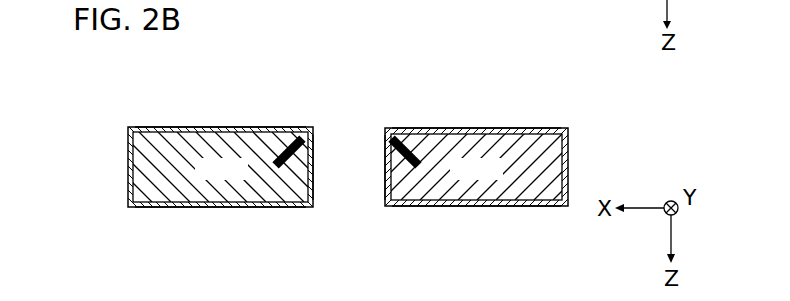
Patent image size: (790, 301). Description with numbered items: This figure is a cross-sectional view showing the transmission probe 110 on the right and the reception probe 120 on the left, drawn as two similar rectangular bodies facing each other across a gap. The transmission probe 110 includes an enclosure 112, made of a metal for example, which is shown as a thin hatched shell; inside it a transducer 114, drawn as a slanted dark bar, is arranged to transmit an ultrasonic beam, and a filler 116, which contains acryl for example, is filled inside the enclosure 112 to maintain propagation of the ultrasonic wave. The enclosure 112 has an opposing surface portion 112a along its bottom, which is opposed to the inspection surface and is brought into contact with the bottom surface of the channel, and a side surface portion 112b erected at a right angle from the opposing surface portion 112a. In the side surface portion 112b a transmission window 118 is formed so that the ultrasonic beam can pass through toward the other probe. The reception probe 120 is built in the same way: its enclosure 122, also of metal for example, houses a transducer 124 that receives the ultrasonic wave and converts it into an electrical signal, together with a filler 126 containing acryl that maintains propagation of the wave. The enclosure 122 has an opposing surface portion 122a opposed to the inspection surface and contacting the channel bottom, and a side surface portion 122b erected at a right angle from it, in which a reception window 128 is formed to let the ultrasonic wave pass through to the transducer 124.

The transmission probe 110 is at (477, 166).
The reception probe 120 is at (221, 165).
The enclosure 112 is at (568, 143).
The enclosure 122 is at (128, 143).
The filler 116 is at (499, 179).
The filler 126 is at (244, 179).
The transducer 114 is at (405, 131).
The transducer 124 is at (283, 130).
The opposing surface portion 112a is at (477, 206).
The side surface portion 112b is at (385, 135).
The transmission window 118 is at (385, 168).
The opposing surface portion 122a is at (217, 207).
The side surface portion 122b is at (312, 135).
The reception window 128 is at (313, 168).